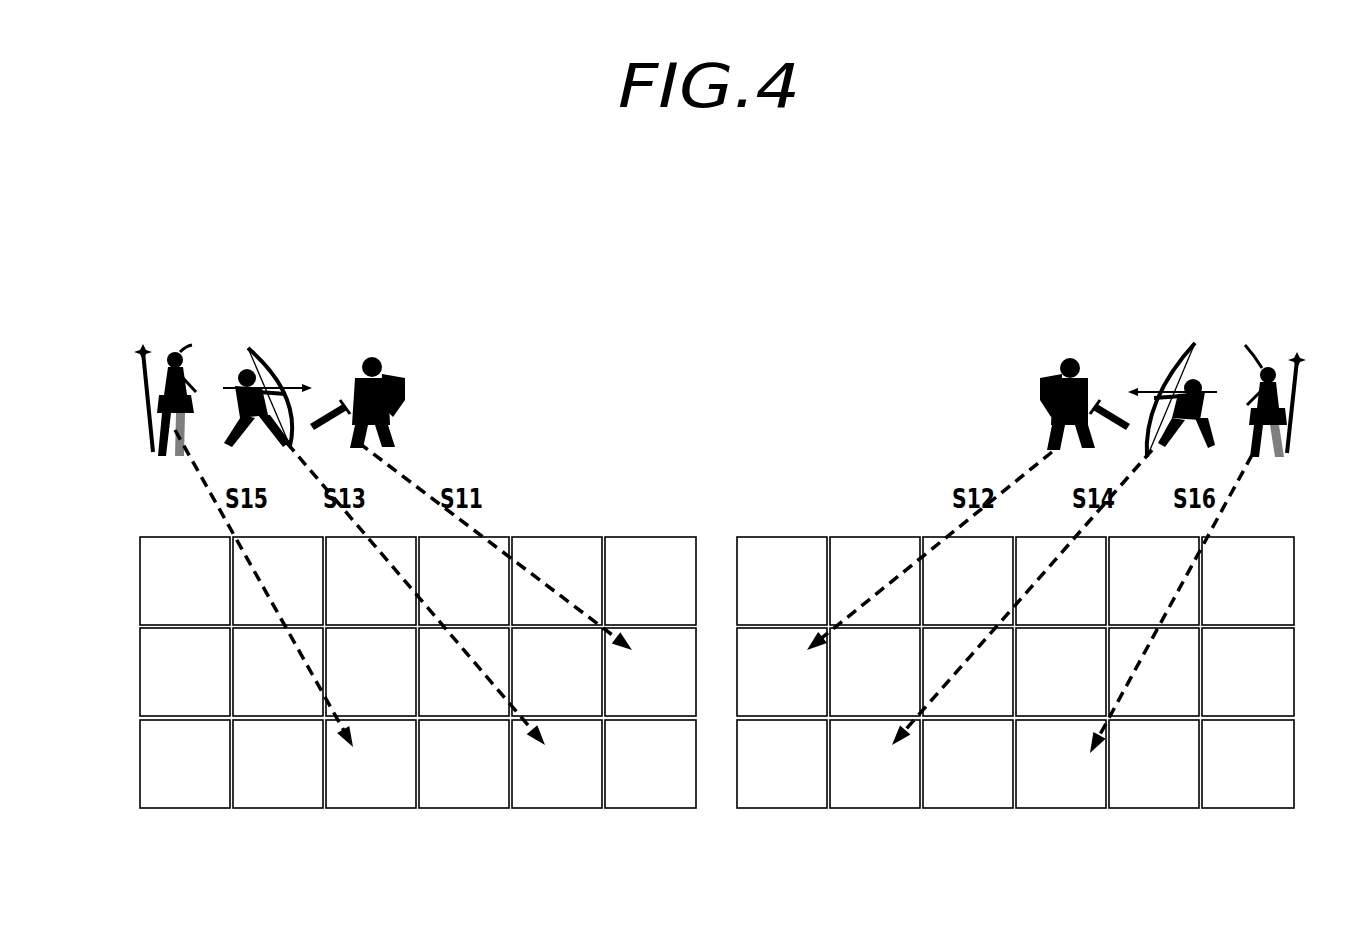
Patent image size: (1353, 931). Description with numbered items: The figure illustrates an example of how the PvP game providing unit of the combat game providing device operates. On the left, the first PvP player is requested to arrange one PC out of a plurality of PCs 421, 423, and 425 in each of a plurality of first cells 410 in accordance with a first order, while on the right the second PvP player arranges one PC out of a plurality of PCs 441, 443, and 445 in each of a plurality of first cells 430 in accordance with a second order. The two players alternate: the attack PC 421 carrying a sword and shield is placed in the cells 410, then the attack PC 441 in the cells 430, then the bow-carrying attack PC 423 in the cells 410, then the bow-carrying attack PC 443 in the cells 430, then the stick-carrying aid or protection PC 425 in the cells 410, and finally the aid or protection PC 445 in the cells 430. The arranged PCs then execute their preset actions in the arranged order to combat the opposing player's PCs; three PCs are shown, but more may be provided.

The plurality of first cells 410 is at (668, 523).
The plurality of first cells 430 is at (1266, 523).
The attack PC 421 is at (385, 342).
The attack PC 423 is at (275, 336).
The aid PC or protection PC 425 is at (189, 342).
The attack PC 441 is at (1068, 358).
The attack PC 443 is at (1203, 342).
The aid PC or protection PC 445 is at (1293, 357).